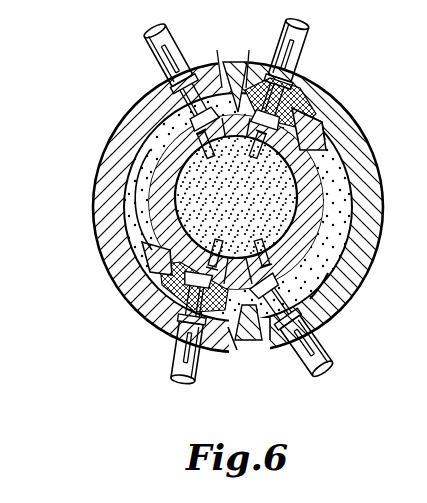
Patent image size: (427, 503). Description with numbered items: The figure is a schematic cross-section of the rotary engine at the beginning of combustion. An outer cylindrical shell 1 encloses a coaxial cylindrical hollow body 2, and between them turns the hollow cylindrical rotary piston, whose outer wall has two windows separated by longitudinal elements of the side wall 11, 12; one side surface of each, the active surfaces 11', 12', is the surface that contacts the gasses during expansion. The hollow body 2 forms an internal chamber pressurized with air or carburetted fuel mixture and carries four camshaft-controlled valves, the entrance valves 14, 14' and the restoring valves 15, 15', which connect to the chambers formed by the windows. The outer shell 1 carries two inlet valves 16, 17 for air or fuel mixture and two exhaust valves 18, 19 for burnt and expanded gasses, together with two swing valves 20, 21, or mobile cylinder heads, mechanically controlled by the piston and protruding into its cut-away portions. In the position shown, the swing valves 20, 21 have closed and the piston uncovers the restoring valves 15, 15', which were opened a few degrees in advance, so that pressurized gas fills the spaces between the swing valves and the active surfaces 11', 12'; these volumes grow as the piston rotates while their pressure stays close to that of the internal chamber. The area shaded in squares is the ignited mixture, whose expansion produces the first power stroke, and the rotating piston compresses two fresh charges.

The outer cylindrical shell 1 is at (372, 187).
The hollow body 2 is at (310, 217).
The longitudinal element of the side wall 11 is at (154, 287).
The active surface 11' is at (137, 289).
The longitudinal element of the side wall 12 is at (347, 129).
The active surface 12' is at (350, 108).
The entrance valve 14 is at (175, 187).
The entrance valve 14' is at (347, 292).
The restoring valve 15 is at (308, 93).
The restoring valve 15' is at (99, 200).
The inlet valve 16 is at (288, 72).
The inlet valve 17 is at (181, 333).
The exhaust valve 18 is at (167, 77).
The exhaust valve 19 is at (304, 323).
The swing valve 20 is at (232, 70).
The swing valve 21 is at (257, 318).